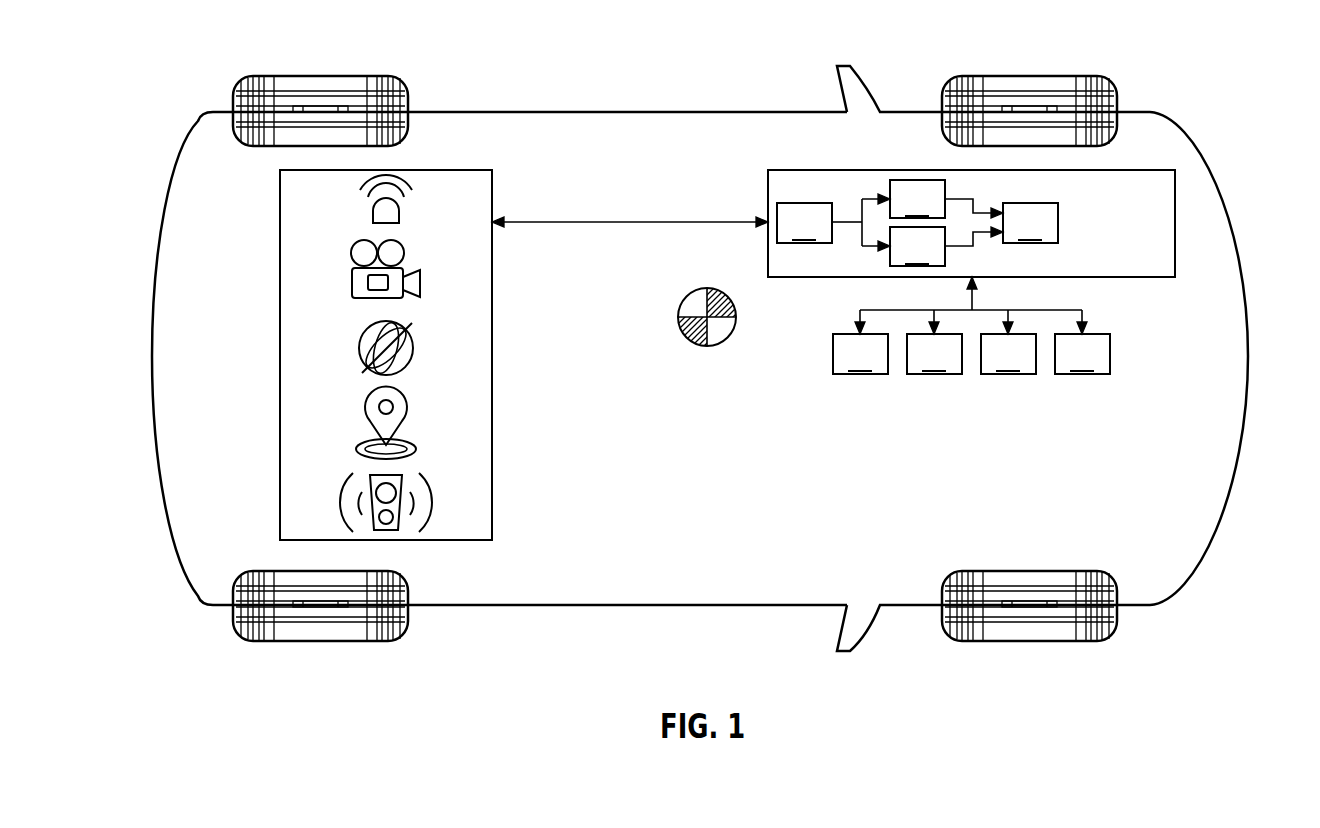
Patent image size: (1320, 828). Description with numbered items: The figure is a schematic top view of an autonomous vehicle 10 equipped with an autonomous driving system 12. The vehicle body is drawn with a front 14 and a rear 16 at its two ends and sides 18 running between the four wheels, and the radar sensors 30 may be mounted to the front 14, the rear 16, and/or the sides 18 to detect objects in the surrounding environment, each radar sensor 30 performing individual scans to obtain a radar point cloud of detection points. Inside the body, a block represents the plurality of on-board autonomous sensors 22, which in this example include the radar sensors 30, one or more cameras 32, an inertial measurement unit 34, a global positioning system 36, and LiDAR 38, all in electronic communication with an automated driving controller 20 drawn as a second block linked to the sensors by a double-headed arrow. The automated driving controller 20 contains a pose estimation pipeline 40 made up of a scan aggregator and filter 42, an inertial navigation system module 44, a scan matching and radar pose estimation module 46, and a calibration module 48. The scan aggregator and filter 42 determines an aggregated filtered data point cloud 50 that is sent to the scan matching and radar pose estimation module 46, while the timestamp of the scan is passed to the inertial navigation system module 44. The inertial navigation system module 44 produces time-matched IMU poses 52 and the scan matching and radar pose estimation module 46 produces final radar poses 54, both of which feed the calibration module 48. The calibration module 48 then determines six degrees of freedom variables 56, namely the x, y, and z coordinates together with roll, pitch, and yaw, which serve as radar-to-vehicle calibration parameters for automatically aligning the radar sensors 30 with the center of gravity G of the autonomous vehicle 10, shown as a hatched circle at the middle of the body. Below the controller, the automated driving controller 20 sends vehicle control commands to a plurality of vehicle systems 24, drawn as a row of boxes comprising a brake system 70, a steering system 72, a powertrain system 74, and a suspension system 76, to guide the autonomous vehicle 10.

The autonomous vehicle 10 is at (514, 36).
The autonomous driving system 12 is at (1146, 124).
The front 14 is at (1248, 356).
The rear 16 is at (150, 356).
The sides 18 is at (545, 112).
The automated driving controller 20 is at (1140, 170).
The plurality of on-board autonomous sensors 22 is at (455, 170).
The plurality of vehicle systems 24 is at (892, 414).
The radar sensor 30 is at (400, 215).
The camera 32 is at (350, 284).
The inertial measurement unit (IMU) 34 is at (359, 348).
The global positioning system (GPS) 36 is at (356, 448).
The LiDAR 38 is at (350, 505).
The pose estimation pipeline 40 is at (849, 180).
The scan aggregator and filter 42 is at (804, 223).
The inertial navigation system (INS) module 44 is at (917, 199).
The scan matching and radar pose estimation module 46 is at (917, 246).
The calibration module 48 is at (1030, 223).
The aggregated filtered data point cloud 50 is at (843, 223).
The time-matched IMU poses 52 is at (977, 208).
The final radar poses 54 is at (977, 237).
The six degrees of freedom (6DoF) variables 56 is at (1170, 210).
The brake system 70 is at (860, 354).
The steering system 72 is at (934, 354).
The powertrain system 74 is at (1008, 354).
The suspension system 76 is at (1082, 354).
The center of gravity G is at (707, 346).